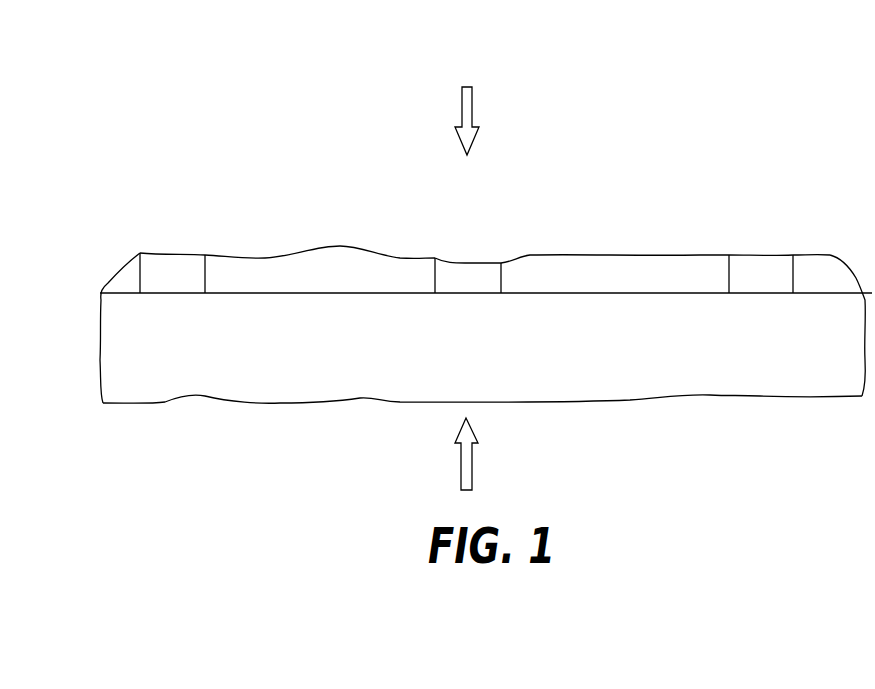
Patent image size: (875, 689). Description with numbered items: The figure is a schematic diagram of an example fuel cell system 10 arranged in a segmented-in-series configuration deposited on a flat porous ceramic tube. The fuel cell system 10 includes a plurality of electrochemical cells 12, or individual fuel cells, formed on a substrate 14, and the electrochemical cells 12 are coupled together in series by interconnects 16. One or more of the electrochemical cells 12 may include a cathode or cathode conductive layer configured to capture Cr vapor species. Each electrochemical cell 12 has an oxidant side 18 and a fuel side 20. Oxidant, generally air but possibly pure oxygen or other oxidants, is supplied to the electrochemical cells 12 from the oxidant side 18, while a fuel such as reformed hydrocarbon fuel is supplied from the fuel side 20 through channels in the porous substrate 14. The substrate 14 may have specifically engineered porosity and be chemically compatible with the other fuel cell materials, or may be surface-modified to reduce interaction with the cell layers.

The fuel cell system 10 is at (486, 249).
The electrochemical cell 12 is at (283, 255).
The substrate 14 is at (742, 397).
The interconnect 16 is at (468, 263).
The oxidant side 18 is at (462, 100).
The fuel side 20 is at (472, 468).